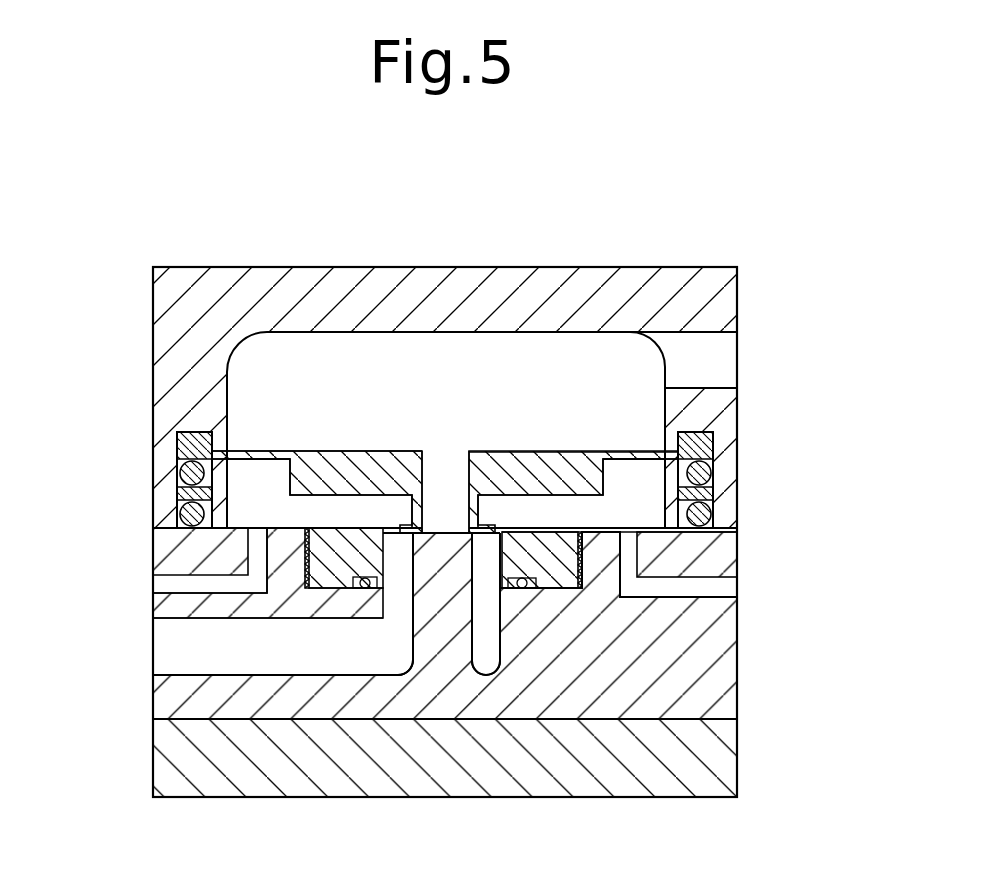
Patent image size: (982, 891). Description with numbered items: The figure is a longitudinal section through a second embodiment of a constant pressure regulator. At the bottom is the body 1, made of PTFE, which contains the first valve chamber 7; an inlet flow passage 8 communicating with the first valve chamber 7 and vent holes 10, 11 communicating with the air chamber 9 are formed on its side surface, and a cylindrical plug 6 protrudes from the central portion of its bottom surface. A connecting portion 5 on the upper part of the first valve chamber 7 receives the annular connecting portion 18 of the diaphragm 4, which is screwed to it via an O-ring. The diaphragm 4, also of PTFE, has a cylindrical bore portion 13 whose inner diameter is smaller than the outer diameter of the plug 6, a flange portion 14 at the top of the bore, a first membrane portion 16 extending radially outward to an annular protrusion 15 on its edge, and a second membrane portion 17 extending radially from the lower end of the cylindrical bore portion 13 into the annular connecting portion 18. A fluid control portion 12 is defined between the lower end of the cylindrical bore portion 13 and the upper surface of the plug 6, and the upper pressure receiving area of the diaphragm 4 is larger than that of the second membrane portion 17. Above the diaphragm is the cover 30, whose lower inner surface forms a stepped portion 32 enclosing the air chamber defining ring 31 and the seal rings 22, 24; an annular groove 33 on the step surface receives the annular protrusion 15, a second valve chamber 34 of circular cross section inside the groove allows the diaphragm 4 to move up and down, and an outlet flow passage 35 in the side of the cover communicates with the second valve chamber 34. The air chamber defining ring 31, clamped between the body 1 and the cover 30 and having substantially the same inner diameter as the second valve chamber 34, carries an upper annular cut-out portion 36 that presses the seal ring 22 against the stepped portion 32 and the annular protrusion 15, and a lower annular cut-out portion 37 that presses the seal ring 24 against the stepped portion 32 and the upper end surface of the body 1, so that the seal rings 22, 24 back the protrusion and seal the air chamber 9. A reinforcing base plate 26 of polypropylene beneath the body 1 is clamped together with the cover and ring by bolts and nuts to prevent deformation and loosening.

The body 1 is at (580, 657).
The diaphragm 4 is at (390, 472).
The connecting portion 5 is at (587, 577).
The cylindrical plug 6 is at (448, 625).
The first valve chamber 7 is at (393, 650).
The inlet flow passage 8 is at (190, 735).
The air chamber 9 is at (248, 488).
The vent hole 10 is at (652, 592).
The vent hole 11 is at (162, 583).
The fluid control portion 12 is at (400, 537).
The cylindrical bore portion 13 is at (421, 495).
The flange portion 14 is at (352, 472).
The annular protrusion 15 is at (718, 438).
The first membrane portion 16 is at (632, 455).
The second membrane portion 17 is at (495, 528).
The annular connecting portion 18 is at (312, 617).
The seal ring 22 is at (713, 472).
The seal ring 24 is at (713, 518).
The reinforcing base plate 26 is at (225, 653).
The cover 30 is at (447, 300).
The air chamber defining ring 31 is at (178, 497).
The stepped portion 32 is at (722, 500).
The annular groove 33 is at (227, 450).
The second valve chamber 34 is at (498, 388).
The outlet flow passage 35 is at (700, 358).
The annular cut-out portion 36 is at (190, 472).
The annular cut-out portion 37 is at (185, 513).